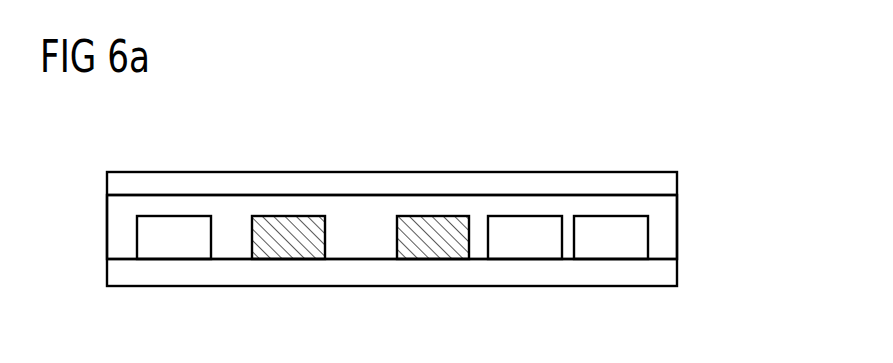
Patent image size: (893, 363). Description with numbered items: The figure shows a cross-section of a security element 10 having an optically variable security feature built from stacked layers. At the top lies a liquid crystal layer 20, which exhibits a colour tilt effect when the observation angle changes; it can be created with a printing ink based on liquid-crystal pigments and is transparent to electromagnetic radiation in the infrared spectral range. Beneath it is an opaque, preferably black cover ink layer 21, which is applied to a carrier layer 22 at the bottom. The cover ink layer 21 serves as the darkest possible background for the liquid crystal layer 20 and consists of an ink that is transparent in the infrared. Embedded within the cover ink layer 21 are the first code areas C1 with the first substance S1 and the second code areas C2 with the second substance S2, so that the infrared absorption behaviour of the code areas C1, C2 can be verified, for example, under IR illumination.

The security element 10 is at (695, 145).
The liquid crystal layer 20 is at (107, 180).
The cover ink layer 21 is at (107, 228).
The carrier layer 22 is at (107, 270).
The first code area C1 is at (390, 275).
The first substance S1 is at (173, 250).
The second code area C2 is at (356, 275).
The second substance S2 is at (278, 248).